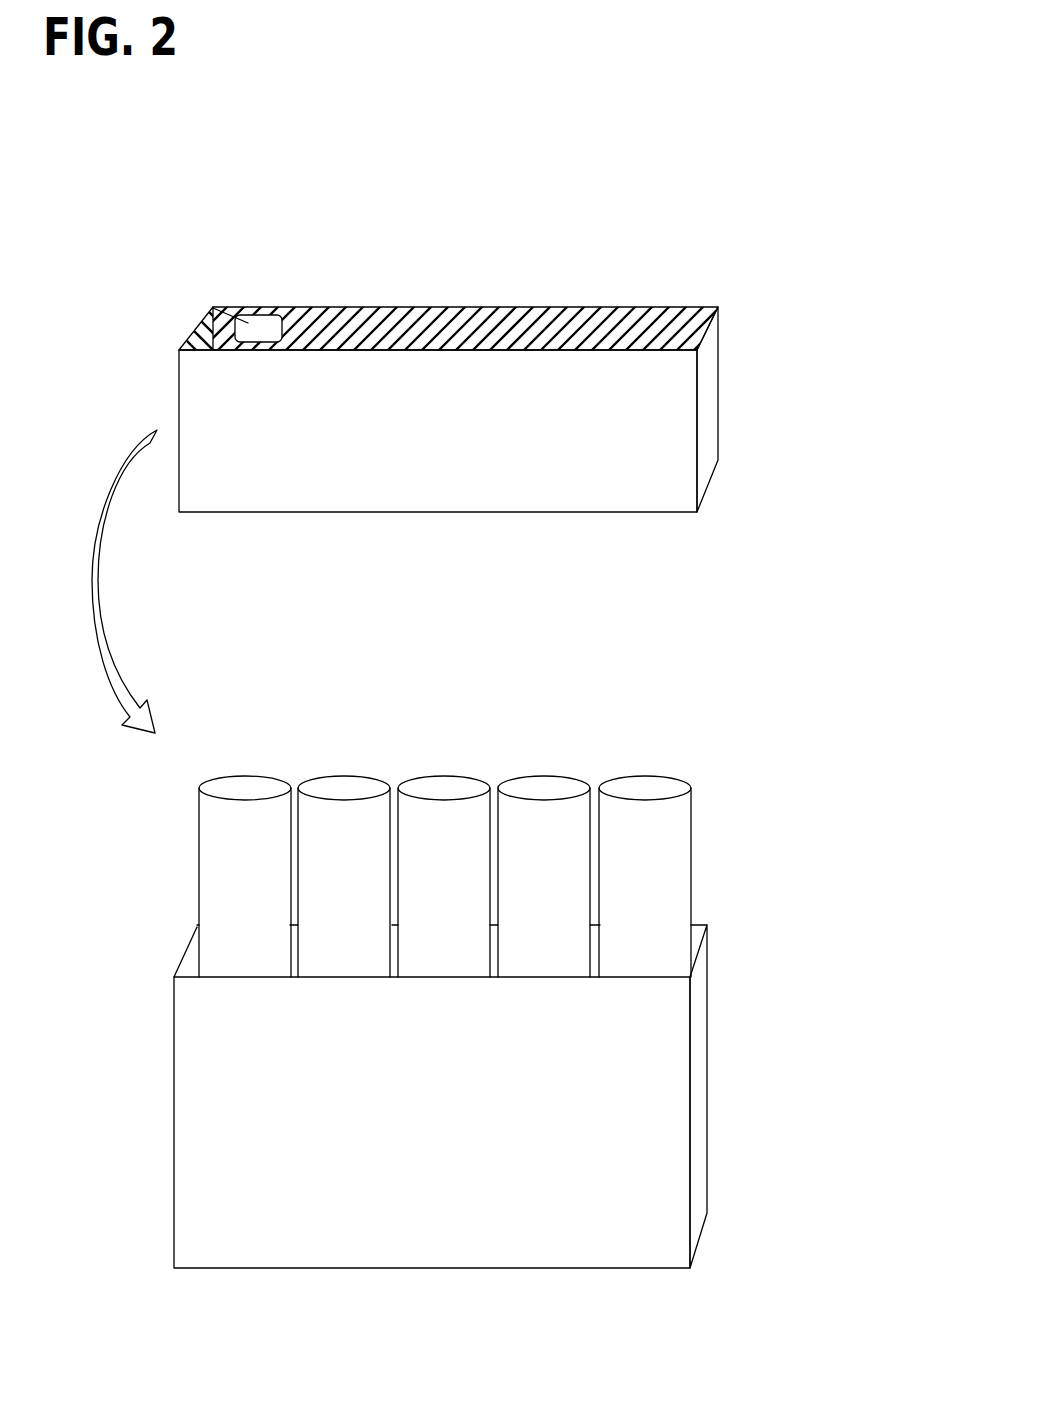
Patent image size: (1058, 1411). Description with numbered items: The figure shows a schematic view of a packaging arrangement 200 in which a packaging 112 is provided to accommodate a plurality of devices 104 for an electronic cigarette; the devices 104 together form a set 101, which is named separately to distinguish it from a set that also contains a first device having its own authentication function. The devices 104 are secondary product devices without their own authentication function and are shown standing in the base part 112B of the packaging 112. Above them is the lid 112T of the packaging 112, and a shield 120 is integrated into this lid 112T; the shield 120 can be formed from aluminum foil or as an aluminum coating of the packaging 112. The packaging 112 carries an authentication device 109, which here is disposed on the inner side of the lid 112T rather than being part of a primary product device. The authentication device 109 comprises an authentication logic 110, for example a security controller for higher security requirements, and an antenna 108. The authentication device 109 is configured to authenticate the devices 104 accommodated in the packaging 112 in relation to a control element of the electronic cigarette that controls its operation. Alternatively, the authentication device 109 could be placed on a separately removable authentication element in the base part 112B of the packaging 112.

The packaging arrangement 200 is at (768, 236).
The set 101 is at (467, 766).
The device 104 is at (735, 672).
The antenna 108 is at (262, 318).
The authentication device 109 is at (197, 227).
The authentication logic 110 is at (174, 277).
The packaging 112 is at (495, 690).
The lid 112T is at (495, 312).
The base part 112B is at (710, 1073).
The shield 120 is at (475, 316).